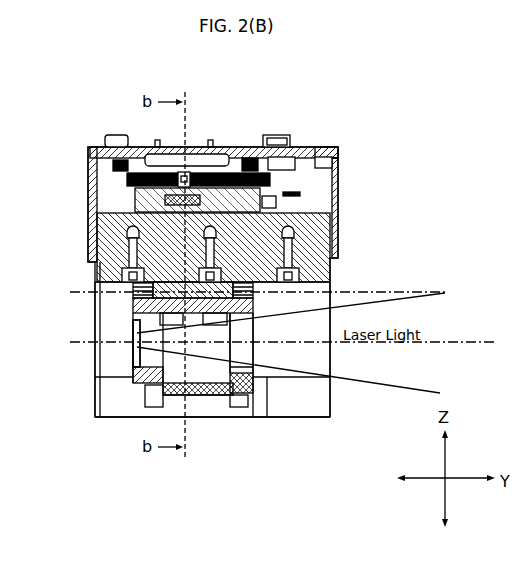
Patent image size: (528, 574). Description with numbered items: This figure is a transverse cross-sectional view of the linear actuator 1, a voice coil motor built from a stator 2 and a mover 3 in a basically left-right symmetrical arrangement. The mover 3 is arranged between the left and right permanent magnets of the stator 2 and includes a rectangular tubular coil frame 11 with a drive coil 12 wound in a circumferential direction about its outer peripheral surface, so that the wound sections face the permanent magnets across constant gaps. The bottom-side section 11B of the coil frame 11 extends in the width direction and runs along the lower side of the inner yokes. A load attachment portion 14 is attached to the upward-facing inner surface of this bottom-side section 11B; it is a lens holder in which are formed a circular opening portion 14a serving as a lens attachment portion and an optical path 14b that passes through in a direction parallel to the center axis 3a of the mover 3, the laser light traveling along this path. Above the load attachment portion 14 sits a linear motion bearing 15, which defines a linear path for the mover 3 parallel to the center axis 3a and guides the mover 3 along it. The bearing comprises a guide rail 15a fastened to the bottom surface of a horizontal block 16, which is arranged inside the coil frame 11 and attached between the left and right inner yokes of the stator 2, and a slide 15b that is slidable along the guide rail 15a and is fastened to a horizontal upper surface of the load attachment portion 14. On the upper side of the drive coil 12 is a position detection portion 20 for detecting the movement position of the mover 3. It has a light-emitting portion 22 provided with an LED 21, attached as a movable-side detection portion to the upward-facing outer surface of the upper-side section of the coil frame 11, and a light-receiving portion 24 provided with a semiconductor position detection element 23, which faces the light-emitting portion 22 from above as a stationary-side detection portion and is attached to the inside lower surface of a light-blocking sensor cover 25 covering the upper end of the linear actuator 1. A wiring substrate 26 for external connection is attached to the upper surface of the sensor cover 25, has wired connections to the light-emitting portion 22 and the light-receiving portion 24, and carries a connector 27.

The linear actuator 1 is at (370, 111).
The stator 2 is at (348, 264).
The mover 3 is at (214, 410).
The center axis 3a is at (340, 288).
The coil frame 11 is at (273, 204).
The bottom-side section 11B is at (190, 393).
The drive coil 12 is at (221, 396).
The load attachment portion 14 is at (132, 383).
The circular opening portion 14a is at (132, 351).
The optical path 14b is at (440, 341).
The linear motion bearing 15 is at (327, 364).
The guide rail 15a is at (298, 283).
The slide 15b is at (250, 313).
The horizontal block 16 is at (318, 227).
The position detection portion 20 is at (198, 136).
The LED 21 is at (244, 157).
The light-emitting portion 22 is at (198, 190).
The semiconductor position detection element 23 is at (195, 164).
The light-receiving portion 24 is at (187, 172).
The light-blocking sensor cover 25 is at (346, 172).
The wiring substrate 26 is at (145, 150).
The connector 27 is at (278, 134).